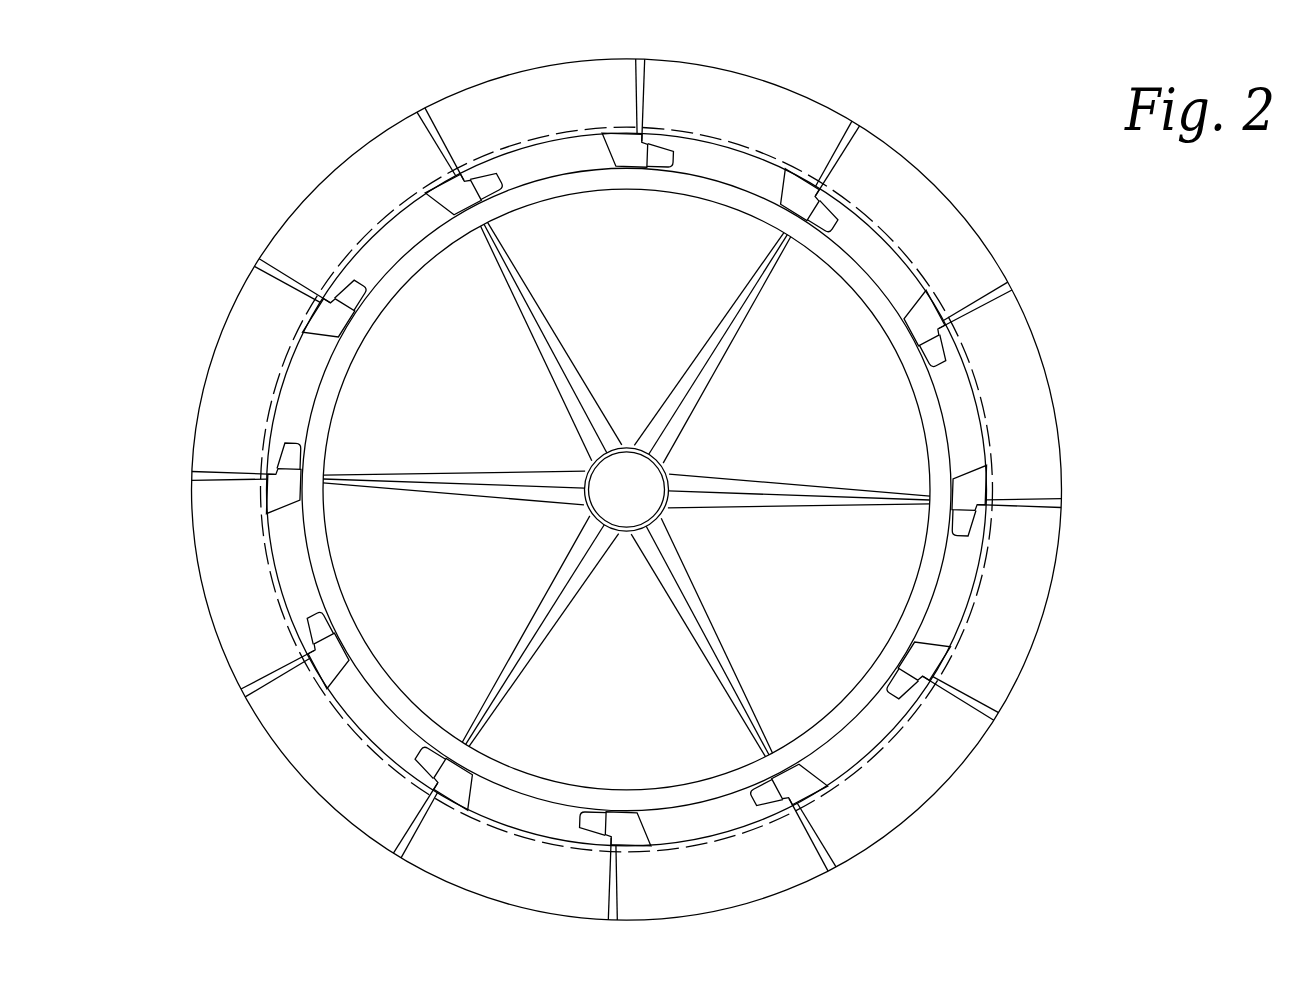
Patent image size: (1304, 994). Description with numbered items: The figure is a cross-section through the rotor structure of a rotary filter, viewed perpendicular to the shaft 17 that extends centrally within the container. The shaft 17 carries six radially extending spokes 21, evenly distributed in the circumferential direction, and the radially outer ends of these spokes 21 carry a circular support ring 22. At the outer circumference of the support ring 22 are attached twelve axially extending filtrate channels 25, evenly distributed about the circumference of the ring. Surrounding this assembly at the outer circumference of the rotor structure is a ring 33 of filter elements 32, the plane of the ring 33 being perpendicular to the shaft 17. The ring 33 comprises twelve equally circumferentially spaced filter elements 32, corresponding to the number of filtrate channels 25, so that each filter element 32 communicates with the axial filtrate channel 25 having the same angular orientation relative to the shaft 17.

The shaft 17 is at (630, 446).
The spokes 21 is at (716, 356).
The support ring 22 is at (877, 306).
The filtrate channels 25 is at (960, 497).
The filter elements 32 is at (980, 268).
The ring of filter elements 33 is at (1070, 398).